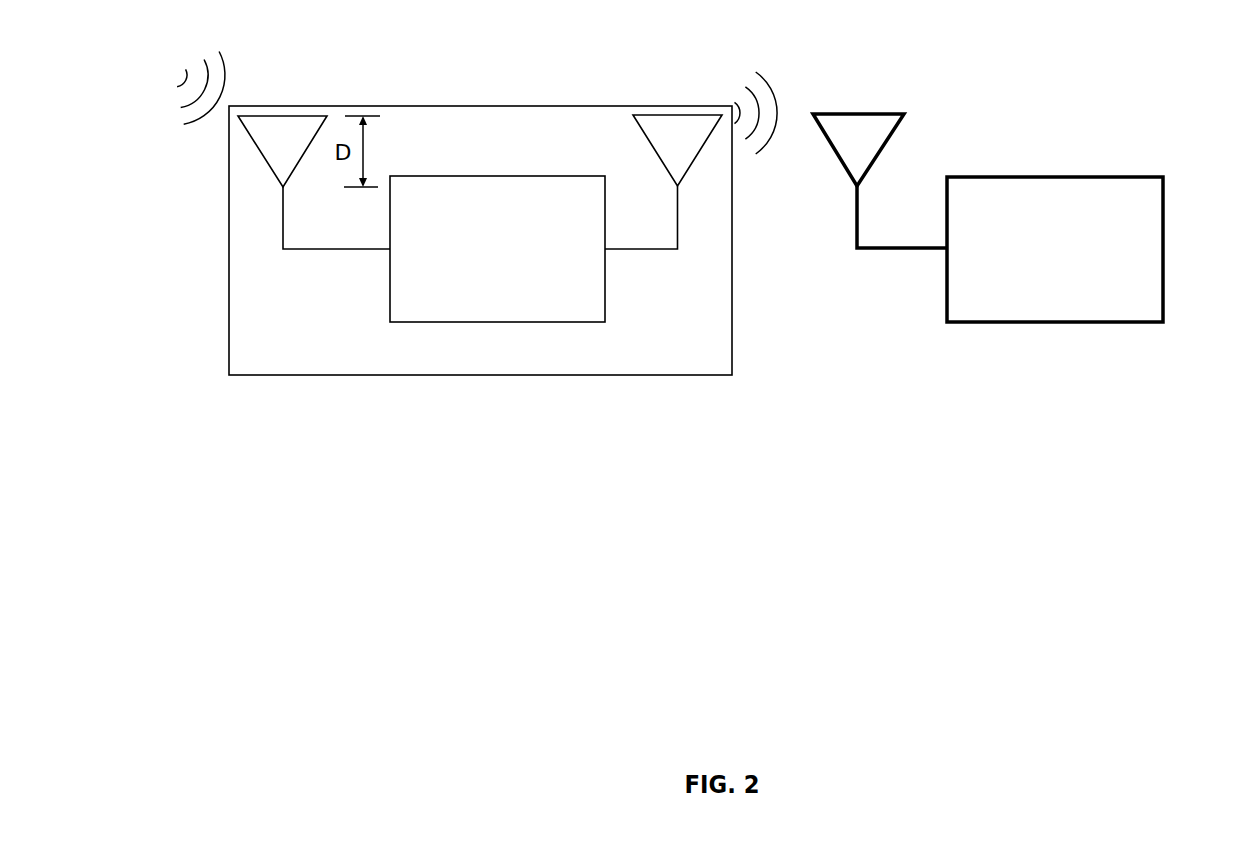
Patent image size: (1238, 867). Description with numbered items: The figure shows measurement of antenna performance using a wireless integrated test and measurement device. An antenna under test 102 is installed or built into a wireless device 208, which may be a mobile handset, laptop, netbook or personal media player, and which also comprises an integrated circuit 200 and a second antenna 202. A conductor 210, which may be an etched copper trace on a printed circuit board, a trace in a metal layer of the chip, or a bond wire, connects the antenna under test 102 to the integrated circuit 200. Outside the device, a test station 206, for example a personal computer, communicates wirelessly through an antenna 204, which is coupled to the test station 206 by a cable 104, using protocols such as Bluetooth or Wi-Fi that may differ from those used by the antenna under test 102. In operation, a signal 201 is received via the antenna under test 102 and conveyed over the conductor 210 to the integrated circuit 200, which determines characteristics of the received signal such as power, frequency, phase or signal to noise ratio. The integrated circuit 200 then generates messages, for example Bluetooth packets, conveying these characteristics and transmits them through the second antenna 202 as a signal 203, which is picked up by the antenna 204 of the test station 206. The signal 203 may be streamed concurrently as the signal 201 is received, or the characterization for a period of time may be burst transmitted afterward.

The antenna under test (AUT) 102 is at (267, 148).
The cable 104 is at (872, 251).
The integrated circuit (IC) 200 is at (482, 272).
The signal 201 is at (172, 67).
The second antenna 202 is at (660, 148).
The signal 203 is at (728, 75).
The antenna 204 is at (840, 148).
The test station 206 is at (1038, 270).
The wireless device 208 is at (460, 368).
The conductor 210 is at (337, 250).